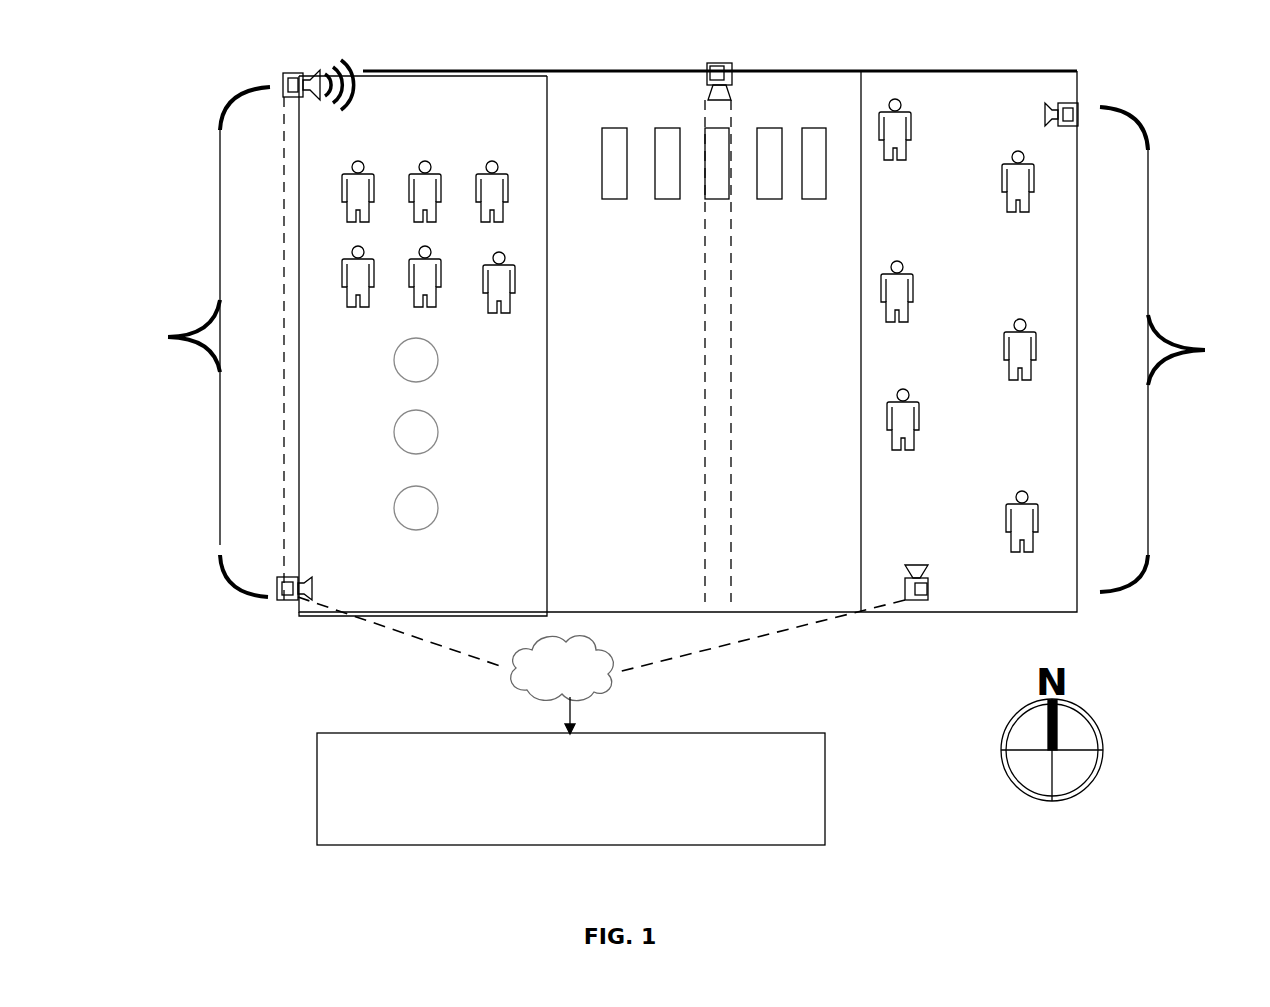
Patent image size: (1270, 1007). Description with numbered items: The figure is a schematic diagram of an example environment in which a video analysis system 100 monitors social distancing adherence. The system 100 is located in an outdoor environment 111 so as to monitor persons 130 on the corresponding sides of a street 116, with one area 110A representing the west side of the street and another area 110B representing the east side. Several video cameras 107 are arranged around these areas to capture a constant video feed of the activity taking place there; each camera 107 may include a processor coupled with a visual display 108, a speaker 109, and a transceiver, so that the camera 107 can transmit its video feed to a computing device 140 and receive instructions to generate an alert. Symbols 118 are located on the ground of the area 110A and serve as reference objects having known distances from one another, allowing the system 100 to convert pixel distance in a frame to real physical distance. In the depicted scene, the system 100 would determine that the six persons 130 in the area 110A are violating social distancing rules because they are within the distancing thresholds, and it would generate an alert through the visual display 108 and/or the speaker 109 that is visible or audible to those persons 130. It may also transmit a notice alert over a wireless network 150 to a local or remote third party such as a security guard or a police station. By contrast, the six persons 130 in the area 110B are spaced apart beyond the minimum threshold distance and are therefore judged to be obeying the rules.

The video analysis system 100 is at (188, 70).
The video camera 107 is at (283, 73).
The visual display 108 is at (284, 102).
The speaker 109 is at (316, 64).
The area 110A is at (183, 342).
The area 110B is at (1178, 349).
The outdoor environment 111 is at (486, 66).
The street 116 is at (600, 90).
The symbols 118 is at (400, 446).
The persons 130 is at (363, 162).
The computing device 140 is at (630, 733).
The wireless network 150 is at (600, 660).